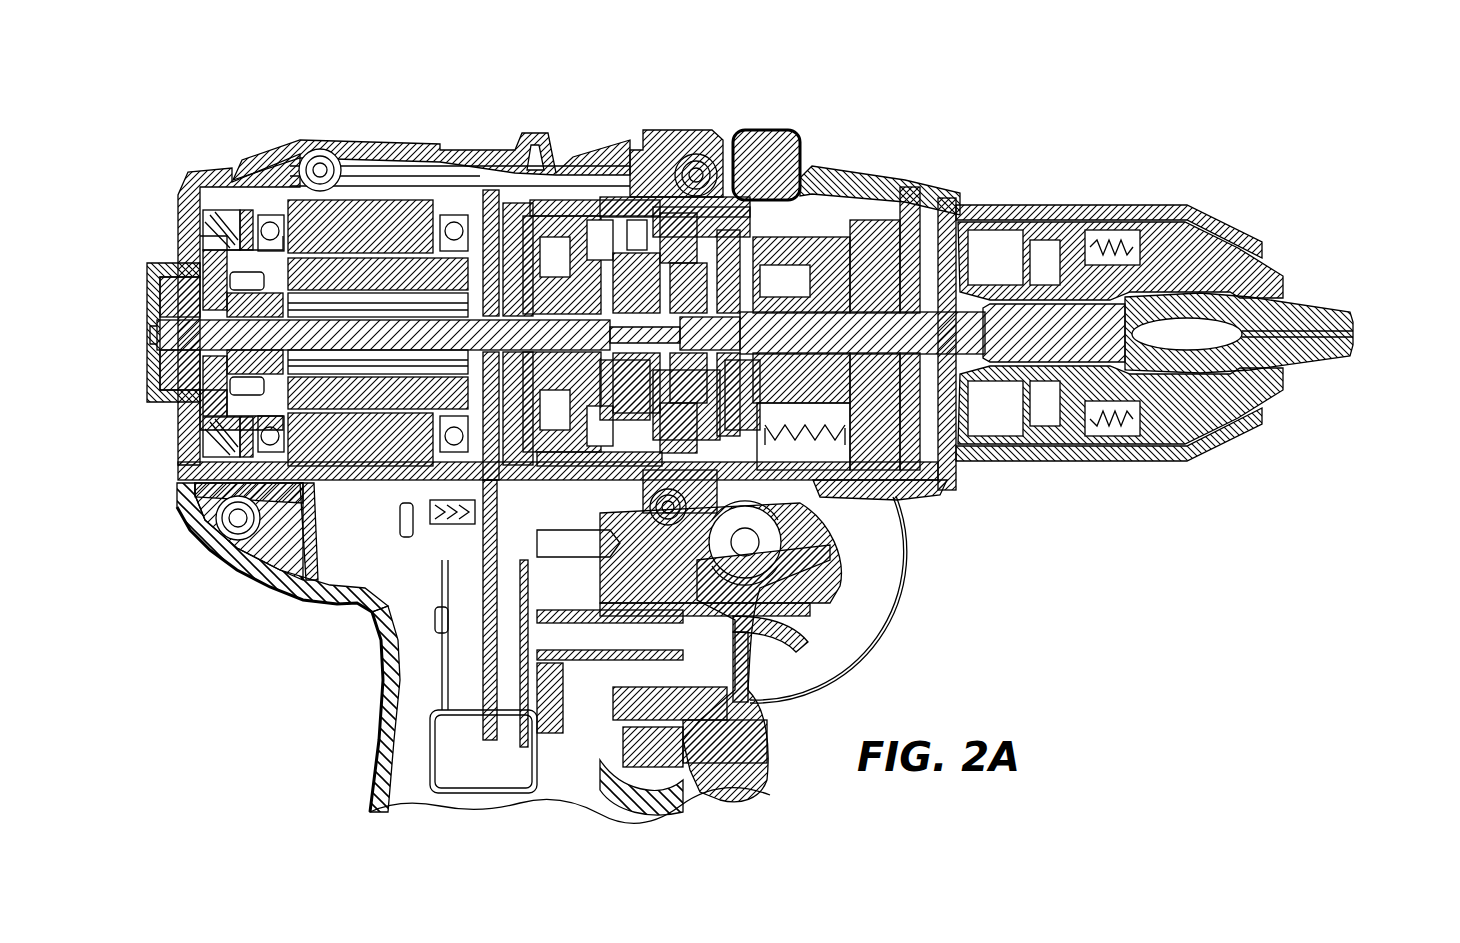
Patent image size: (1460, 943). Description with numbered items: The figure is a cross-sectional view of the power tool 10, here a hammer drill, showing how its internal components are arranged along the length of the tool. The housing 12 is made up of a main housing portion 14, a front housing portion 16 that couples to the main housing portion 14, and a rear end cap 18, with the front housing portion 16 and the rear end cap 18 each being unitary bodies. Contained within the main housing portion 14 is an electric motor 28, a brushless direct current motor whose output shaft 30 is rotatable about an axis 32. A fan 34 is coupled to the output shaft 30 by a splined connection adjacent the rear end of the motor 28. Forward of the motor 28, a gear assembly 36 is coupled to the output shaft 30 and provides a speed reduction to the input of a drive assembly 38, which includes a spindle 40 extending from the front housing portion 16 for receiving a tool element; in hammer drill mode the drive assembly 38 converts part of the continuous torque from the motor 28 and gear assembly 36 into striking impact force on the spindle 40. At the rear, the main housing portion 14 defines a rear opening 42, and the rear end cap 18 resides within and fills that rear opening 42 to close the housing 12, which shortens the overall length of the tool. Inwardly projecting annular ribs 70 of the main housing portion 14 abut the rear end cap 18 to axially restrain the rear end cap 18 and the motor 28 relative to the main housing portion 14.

The power tool 10 is at (1006, 613).
The housing 12 is at (386, 680).
The main housing portion 14 is at (360, 598).
The front housing portion 16 is at (684, 132).
The rear end cap 18 is at (185, 463).
The electric motor 28 is at (370, 170).
The output shaft 30 is at (418, 334).
The axis 32 is at (1436, 334).
The fan 34 is at (250, 404).
The gear assembly 36 is at (549, 124).
The drive assembly 38 is at (812, 206).
The spindle 40 is at (937, 470).
The rear opening 42 is at (180, 190).
The annular ribs 70 is at (306, 156).